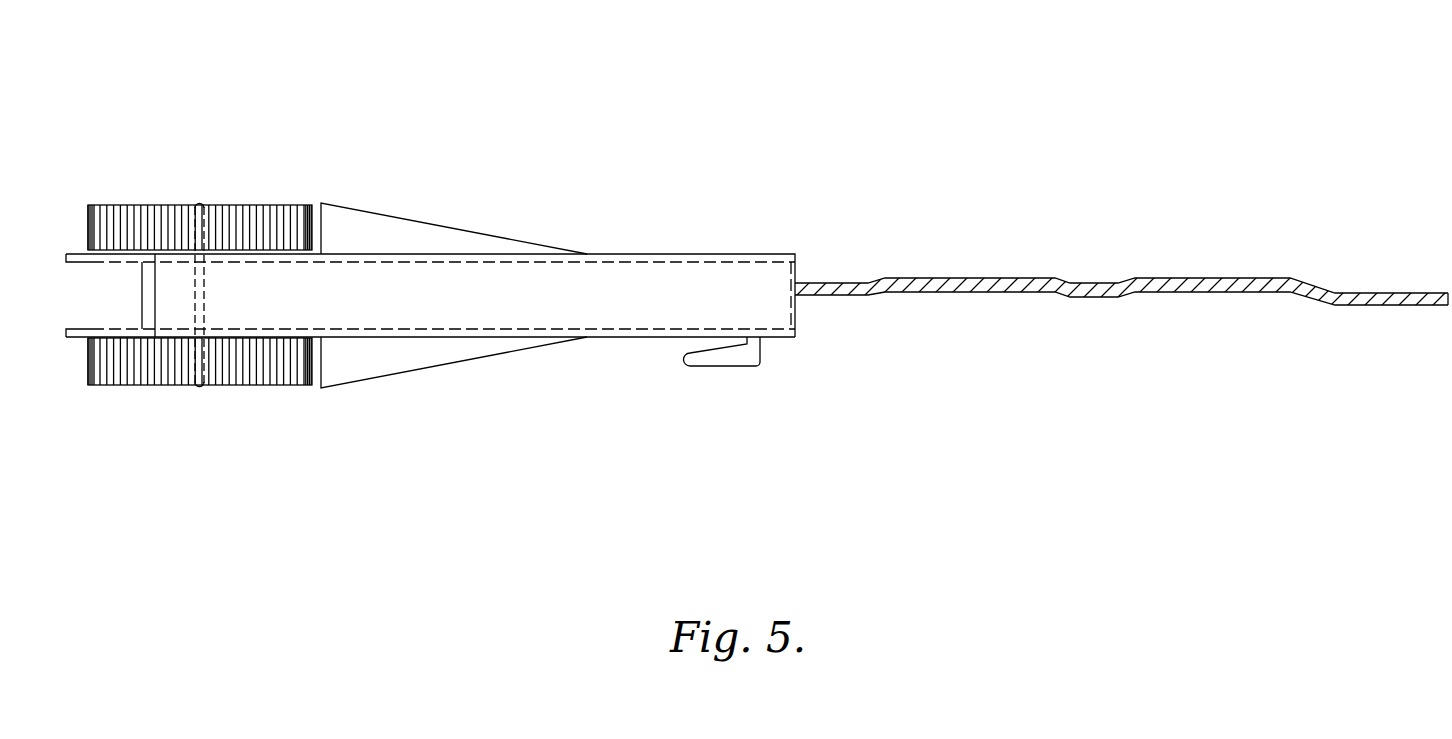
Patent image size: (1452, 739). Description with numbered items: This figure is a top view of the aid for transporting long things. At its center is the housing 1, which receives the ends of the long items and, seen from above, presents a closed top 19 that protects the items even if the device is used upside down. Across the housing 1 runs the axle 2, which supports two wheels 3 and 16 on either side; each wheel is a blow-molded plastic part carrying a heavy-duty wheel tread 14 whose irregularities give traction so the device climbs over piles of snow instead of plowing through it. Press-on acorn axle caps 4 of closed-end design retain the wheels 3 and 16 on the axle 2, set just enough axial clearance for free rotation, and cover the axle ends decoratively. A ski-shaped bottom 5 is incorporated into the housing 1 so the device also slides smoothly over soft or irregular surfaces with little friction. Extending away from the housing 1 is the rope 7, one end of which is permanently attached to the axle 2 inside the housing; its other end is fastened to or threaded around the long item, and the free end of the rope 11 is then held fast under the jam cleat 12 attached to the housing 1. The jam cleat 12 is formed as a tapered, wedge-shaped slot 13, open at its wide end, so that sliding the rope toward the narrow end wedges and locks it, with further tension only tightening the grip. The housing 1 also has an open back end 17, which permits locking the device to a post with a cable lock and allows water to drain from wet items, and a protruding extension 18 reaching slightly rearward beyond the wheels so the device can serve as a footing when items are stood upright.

The housing 1 is at (775, 255).
The axle 2 is at (204, 287).
The wheel 3 is at (147, 385).
The acorn axle cap 4 is at (197, 205).
The ski-shaped bottom 5 is at (515, 240).
The rope 7 is at (1107, 297).
The free end of the rope 11 is at (1412, 305).
The jam cleat 12 is at (738, 368).
The tapered wedge-shaped slot 13 is at (692, 347).
The wheel tread 14 is at (292, 228).
The wheel 16 is at (170, 205).
The open back end 17 is at (142, 277).
The protruding extension 18 is at (72, 337).
The closed top 19 is at (703, 292).